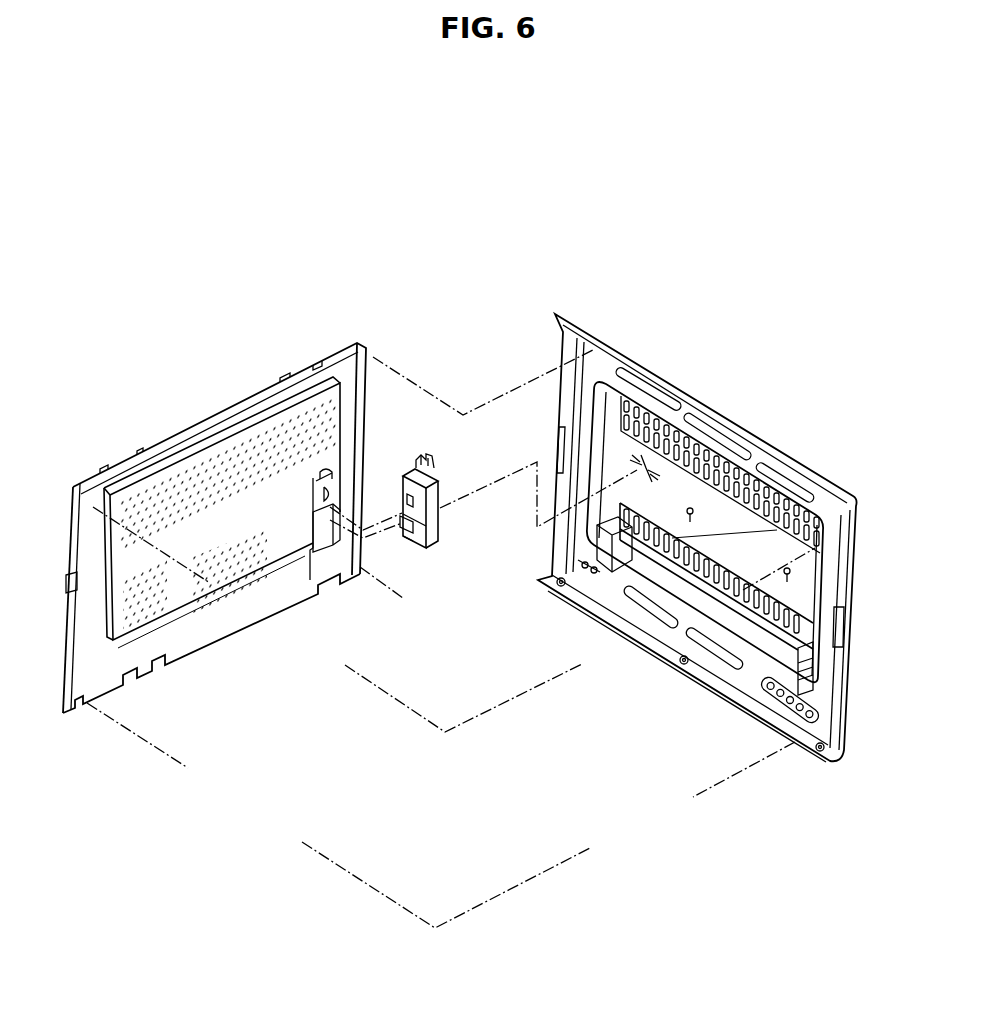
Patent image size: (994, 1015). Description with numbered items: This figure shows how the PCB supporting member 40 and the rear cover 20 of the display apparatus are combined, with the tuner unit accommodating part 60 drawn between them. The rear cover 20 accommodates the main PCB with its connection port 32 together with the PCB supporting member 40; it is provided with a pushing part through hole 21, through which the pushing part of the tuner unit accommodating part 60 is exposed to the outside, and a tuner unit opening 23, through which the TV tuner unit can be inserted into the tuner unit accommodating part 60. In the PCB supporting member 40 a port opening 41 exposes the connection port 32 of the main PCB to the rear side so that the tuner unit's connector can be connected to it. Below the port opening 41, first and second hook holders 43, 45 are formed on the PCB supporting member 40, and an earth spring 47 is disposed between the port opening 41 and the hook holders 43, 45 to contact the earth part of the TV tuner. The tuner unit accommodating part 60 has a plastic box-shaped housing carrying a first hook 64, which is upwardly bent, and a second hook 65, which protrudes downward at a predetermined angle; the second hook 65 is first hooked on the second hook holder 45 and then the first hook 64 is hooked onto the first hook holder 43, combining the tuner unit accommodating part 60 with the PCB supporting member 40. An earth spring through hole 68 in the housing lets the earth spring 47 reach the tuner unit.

The rear cover 20 is at (797, 470).
The pushing part through hole 21 is at (644, 462).
The tuner unit opening 23 is at (617, 548).
The connection port 32 is at (326, 478).
The PCB supporting member 40 is at (80, 688).
The port opening 41 is at (329, 473).
The first hook holder 43 is at (313, 515).
The second hook holder 45 is at (332, 522).
The earth spring 47 is at (323, 493).
The tuner unit accommodating part 60 is at (455, 455).
The first hook 64 is at (412, 538).
The second hook 65 is at (404, 530).
The earth spring through hole 68 is at (418, 508).